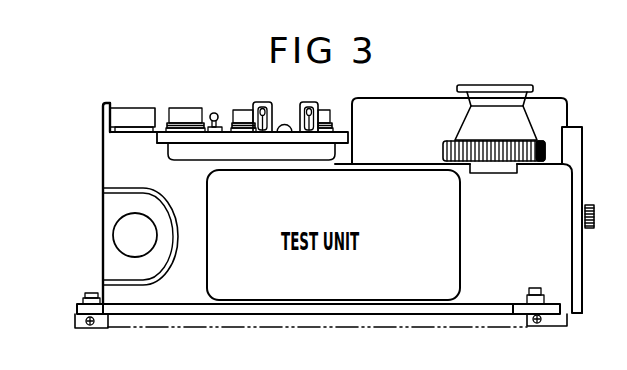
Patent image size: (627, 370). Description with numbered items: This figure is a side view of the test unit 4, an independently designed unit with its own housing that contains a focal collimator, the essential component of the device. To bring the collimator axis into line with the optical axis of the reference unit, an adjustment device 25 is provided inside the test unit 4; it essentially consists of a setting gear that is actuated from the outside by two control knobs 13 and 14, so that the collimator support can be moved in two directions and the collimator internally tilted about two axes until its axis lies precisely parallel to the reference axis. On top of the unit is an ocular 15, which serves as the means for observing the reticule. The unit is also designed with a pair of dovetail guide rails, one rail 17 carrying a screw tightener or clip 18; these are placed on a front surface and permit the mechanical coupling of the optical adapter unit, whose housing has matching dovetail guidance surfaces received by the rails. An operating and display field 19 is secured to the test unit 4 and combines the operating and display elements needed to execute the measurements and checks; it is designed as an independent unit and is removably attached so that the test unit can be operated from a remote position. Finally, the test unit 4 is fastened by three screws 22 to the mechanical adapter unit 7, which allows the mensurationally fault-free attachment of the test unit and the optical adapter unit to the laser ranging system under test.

The test unit 4 is at (553, 265).
The mechanical adapter unit 7 is at (312, 318).
The control knob 13 is at (143, 116).
The control knob 14 is at (122, 243).
The ocular 15 is at (506, 85).
The dovetail guide rail 17 is at (575, 126).
The screw tightener 18 is at (594, 207).
The operating and display field 19 is at (228, 108).
The screws 22 is at (85, 296).
The adjustment device 25 is at (100, 180).